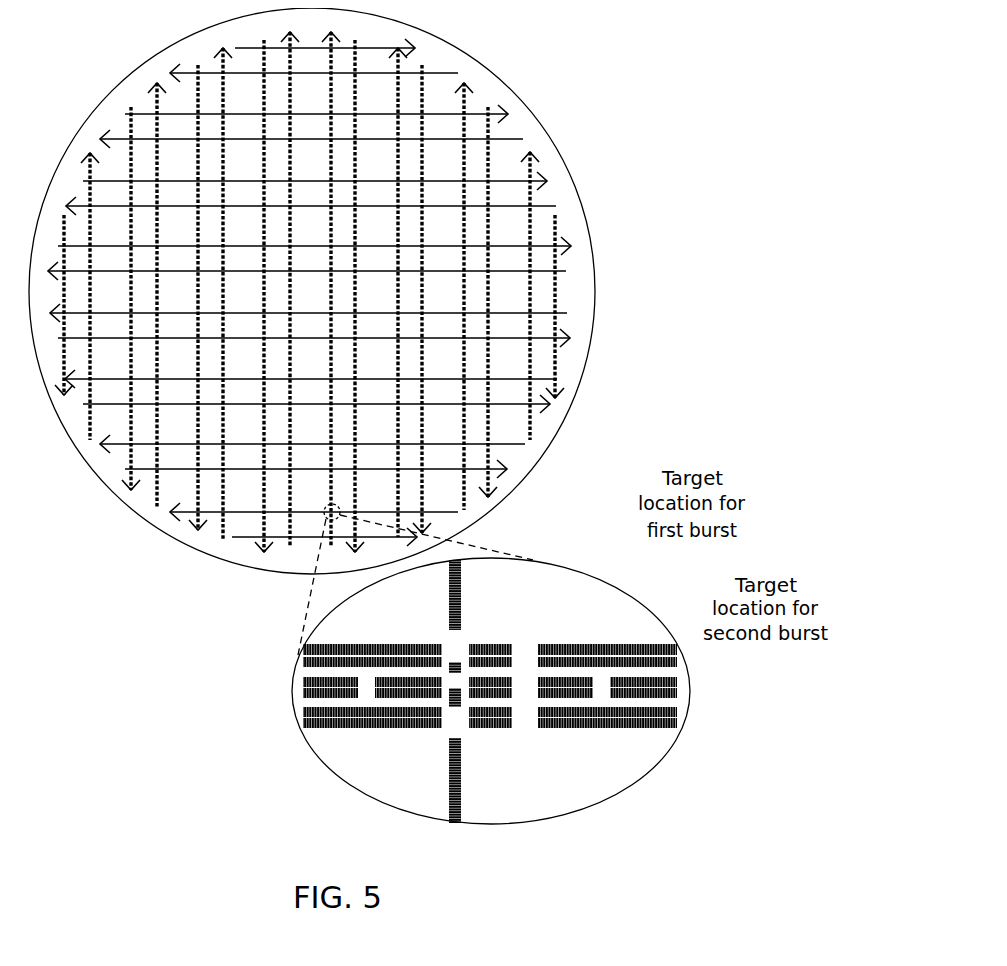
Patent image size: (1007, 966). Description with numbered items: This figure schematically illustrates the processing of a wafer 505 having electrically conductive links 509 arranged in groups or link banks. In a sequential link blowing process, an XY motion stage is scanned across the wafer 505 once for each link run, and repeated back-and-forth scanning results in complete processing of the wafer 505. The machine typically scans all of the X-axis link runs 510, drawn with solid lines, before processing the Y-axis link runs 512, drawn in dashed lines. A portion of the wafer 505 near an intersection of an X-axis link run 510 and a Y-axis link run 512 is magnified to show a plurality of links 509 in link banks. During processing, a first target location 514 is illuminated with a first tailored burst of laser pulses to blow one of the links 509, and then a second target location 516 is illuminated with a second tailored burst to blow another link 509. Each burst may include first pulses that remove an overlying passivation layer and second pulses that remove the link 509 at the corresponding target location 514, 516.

The wafer 505 is at (594, 260).
The X-axis link run 510 is at (548, 205).
The Y-axis link run 512 is at (490, 452).
The first target location 514 is at (462, 580).
The second target location 516 is at (613, 645).
The electrically conductive link 509 is at (582, 750).